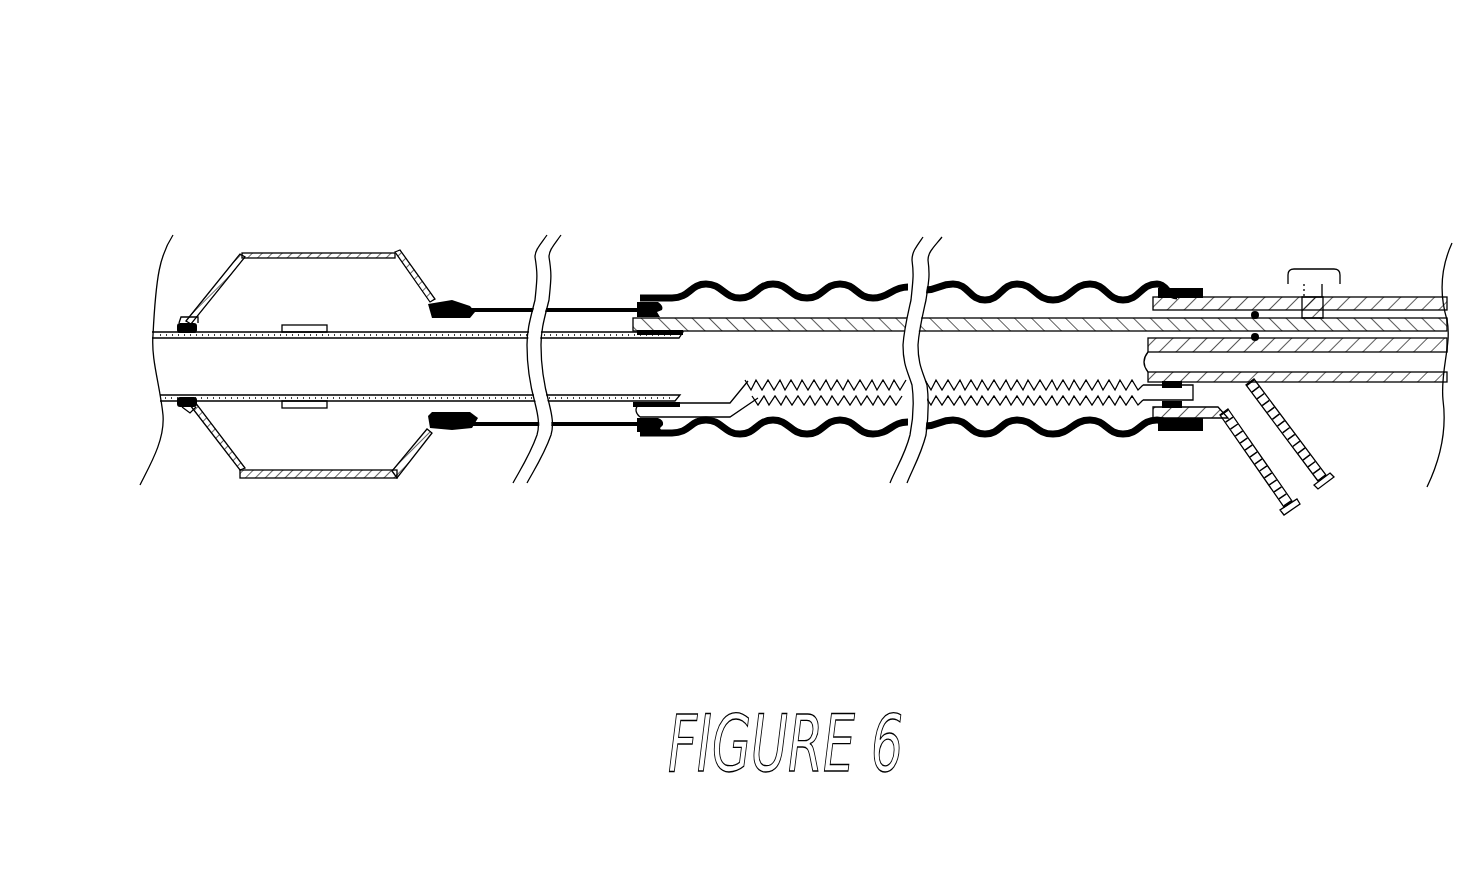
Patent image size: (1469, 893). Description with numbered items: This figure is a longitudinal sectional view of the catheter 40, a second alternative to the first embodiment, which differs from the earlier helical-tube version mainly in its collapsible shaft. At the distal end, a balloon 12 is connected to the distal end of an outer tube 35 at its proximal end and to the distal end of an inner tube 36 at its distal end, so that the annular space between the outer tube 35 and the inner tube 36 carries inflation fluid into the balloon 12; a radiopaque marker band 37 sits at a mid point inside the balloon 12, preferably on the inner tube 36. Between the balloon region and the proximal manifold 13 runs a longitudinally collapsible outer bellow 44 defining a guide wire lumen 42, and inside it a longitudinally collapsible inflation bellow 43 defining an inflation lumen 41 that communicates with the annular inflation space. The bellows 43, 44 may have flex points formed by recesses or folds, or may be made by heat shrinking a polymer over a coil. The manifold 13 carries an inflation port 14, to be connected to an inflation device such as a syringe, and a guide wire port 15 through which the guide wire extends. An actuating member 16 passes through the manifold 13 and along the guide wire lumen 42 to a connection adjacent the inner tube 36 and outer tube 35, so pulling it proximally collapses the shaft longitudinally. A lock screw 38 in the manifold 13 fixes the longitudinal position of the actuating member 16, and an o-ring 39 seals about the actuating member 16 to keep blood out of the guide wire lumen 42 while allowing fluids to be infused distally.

The balloon 12 is at (323, 168).
The manifold 13 is at (1382, 515).
The inflation port 14 is at (1267, 485).
The guide wire port 15 is at (1407, 383).
The actuating member 16 is at (727, 318).
The outer tube 35 is at (507, 308).
The inner tube 36 is at (505, 398).
The radiopaque marker band 37 is at (307, 405).
The lock screw 38 is at (1317, 267).
The o-ring 39 is at (1252, 302).
The catheter 40 is at (923, 82).
The inflation lumen 41 is at (285, 445).
The guide wire lumen 42 is at (814, 377).
The inflation bellow 43 is at (813, 398).
The outer bellow 44 is at (722, 425).